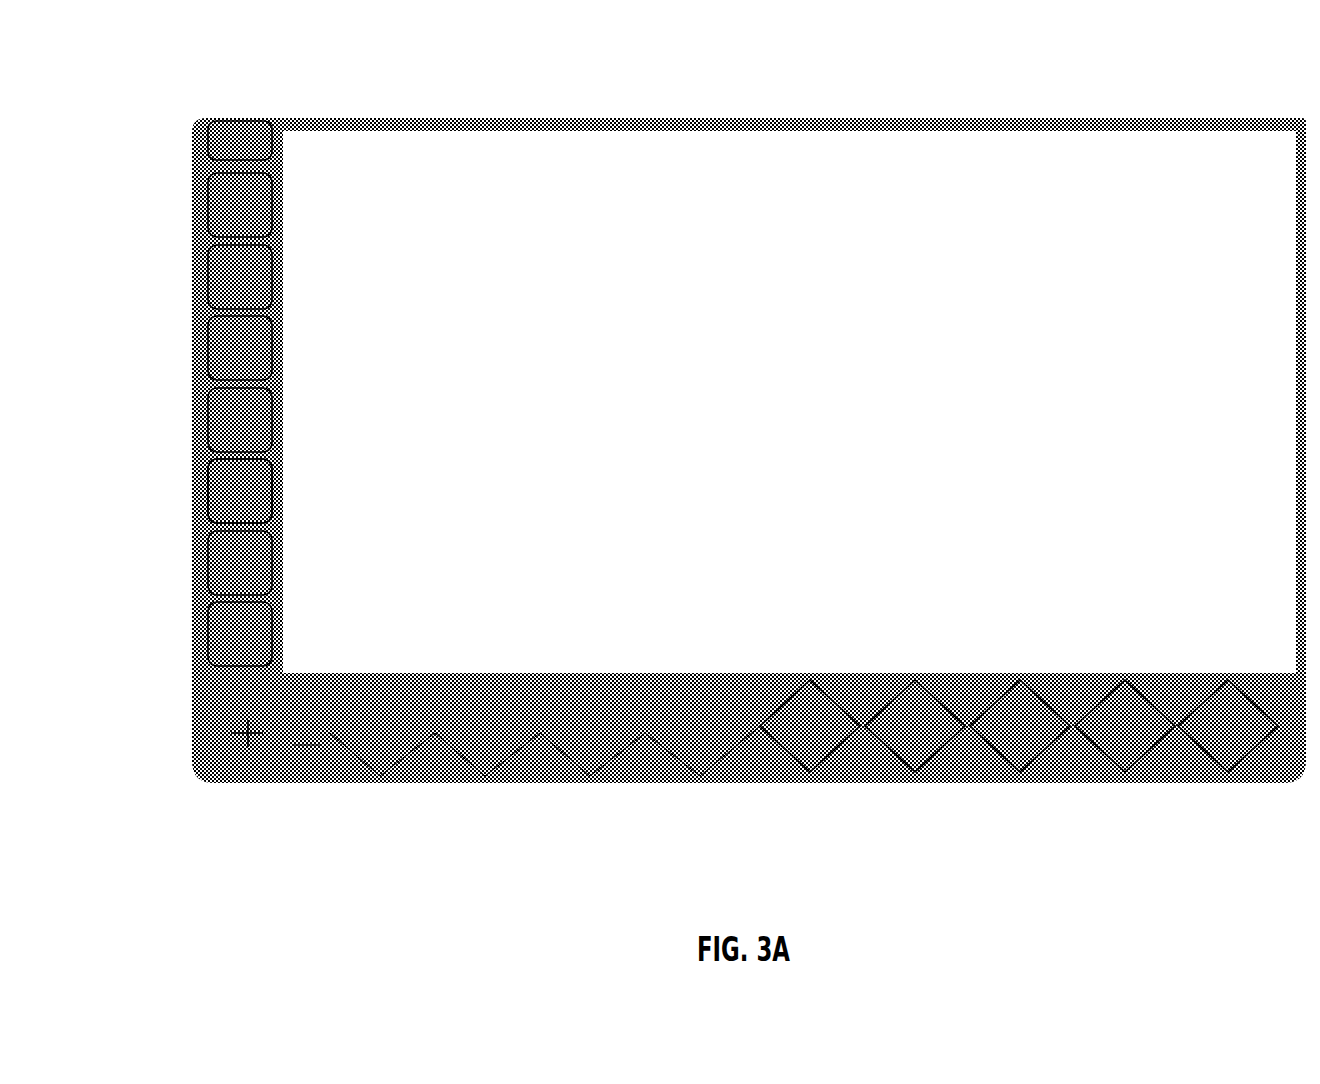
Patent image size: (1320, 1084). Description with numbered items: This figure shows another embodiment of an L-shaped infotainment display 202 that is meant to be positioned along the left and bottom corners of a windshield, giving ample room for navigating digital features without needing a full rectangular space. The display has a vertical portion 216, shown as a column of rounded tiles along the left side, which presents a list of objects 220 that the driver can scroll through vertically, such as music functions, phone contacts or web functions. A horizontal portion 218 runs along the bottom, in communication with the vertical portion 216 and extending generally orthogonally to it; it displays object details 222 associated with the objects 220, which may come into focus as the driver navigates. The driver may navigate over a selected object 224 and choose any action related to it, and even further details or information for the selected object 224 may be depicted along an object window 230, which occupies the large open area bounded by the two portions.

The L-shaped infotainment display 202 is at (155, 82).
The vertical portion 216 is at (273, 388).
The horizontal portion 218 is at (747, 693).
The objects 220 is at (260, 507).
The object details 222 is at (594, 744).
The selected object 224 is at (237, 758).
The object window 230 is at (847, 162).